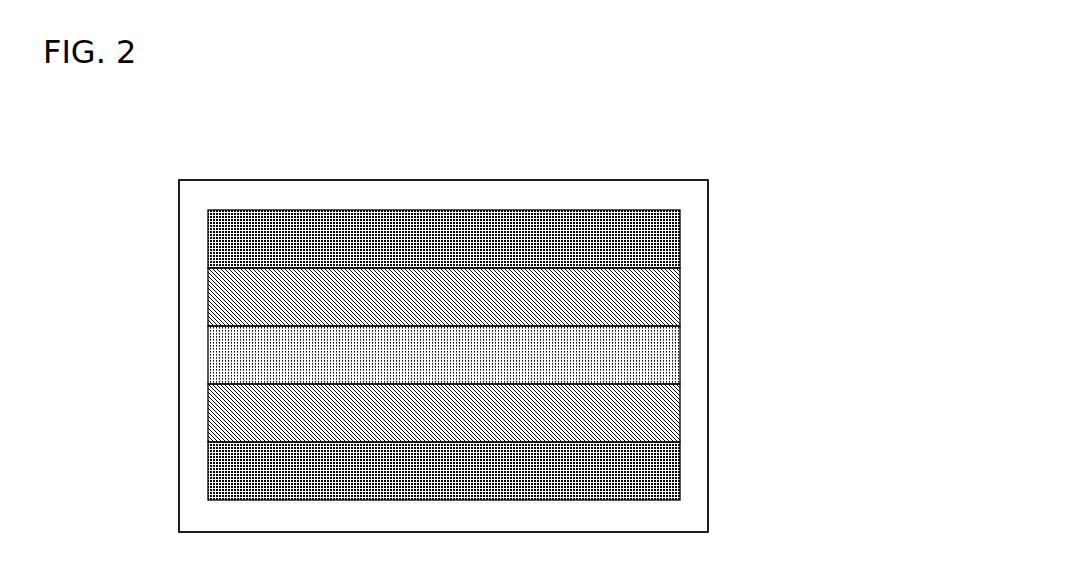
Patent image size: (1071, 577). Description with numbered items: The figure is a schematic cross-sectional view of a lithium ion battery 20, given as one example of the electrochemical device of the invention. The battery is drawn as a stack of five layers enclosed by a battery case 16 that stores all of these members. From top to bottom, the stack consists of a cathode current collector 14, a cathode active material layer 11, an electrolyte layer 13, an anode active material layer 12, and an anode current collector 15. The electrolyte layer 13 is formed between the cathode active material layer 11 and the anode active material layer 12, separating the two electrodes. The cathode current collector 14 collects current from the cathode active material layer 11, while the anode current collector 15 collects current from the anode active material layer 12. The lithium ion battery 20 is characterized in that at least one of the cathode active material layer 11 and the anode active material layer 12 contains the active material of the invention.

The lithium ion battery 20 is at (597, 142).
The battery case 16 is at (580, 192).
The cathode current collector 14 is at (578, 236).
The cathode active material layer 11 is at (578, 297).
The electrolyte layer 13 is at (578, 353).
The anode active material layer 12 is at (580, 412).
The anode current collector 15 is at (580, 471).